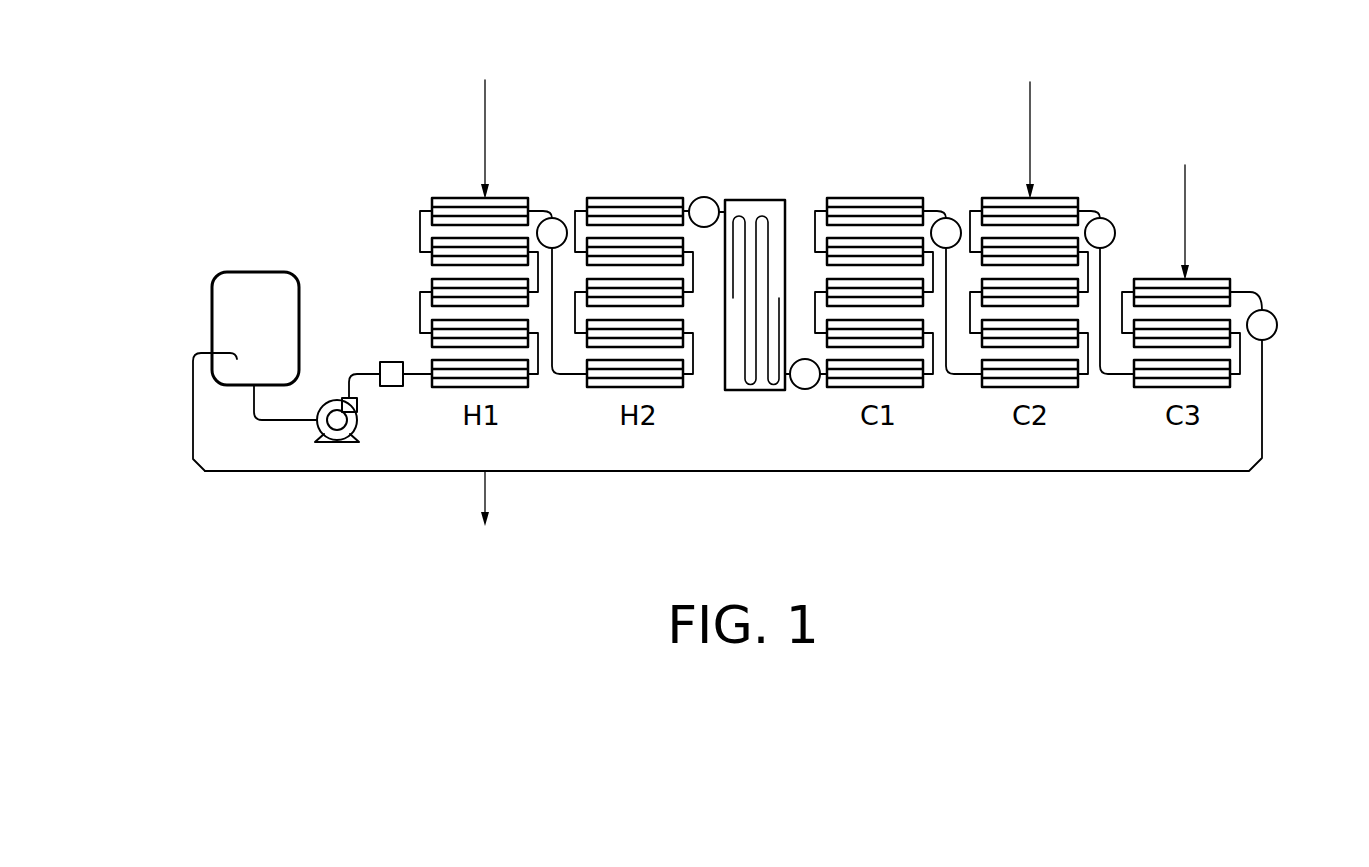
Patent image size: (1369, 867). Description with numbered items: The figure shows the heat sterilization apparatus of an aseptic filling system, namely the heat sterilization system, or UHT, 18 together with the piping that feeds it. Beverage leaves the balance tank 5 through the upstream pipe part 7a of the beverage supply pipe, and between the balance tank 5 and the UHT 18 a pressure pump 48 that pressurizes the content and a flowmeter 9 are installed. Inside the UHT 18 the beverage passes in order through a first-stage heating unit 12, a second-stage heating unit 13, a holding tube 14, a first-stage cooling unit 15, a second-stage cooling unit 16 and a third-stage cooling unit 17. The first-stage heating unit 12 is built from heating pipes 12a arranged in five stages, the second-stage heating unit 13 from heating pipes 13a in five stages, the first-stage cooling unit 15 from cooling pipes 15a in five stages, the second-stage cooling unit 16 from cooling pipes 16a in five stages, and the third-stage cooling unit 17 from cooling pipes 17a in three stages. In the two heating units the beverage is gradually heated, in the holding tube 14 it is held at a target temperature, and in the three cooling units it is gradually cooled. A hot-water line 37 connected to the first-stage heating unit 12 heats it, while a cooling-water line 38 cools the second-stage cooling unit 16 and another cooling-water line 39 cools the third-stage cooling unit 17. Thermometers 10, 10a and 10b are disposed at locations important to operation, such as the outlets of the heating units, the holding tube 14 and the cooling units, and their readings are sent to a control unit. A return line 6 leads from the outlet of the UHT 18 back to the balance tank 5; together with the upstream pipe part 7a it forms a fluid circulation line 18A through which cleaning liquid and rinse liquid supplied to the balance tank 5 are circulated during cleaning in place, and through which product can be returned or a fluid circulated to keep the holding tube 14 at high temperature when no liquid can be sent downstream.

The balance tank 5 is at (235, 272).
The return line 6 is at (193, 407).
The upstream pipe part 7a is at (485, 490).
The flowmeter 9 is at (385, 362).
The thermometer 10 is at (805, 389).
The thermometer 10a is at (561, 219).
The thermometer 10b is at (706, 197).
The first-stage heating unit 12 is at (443, 198).
The heating pipes 12a is at (496, 198).
The second-stage heating unit 13 is at (629, 192).
The heating pipes 13a is at (653, 198).
The holding tube 14 is at (768, 200).
The first-stage cooling unit 15 is at (886, 198).
The cooling pipes 15a is at (905, 198).
The second-stage cooling unit 16 is at (1005, 198).
The cooling pipes 16a is at (1053, 198).
The third-stage cooling unit 17 is at (1155, 279).
The cooling pipes 17a is at (1210, 279).
The heat sterilization system (UHT) 18 is at (384, 188).
The fluid circulation line 18A is at (906, 482).
The hot-water line 37 is at (484, 124).
The cooling-water line 38 is at (1029, 125).
The cooling-water line 39 is at (1184, 207).
The pressure pump 48 is at (330, 400).